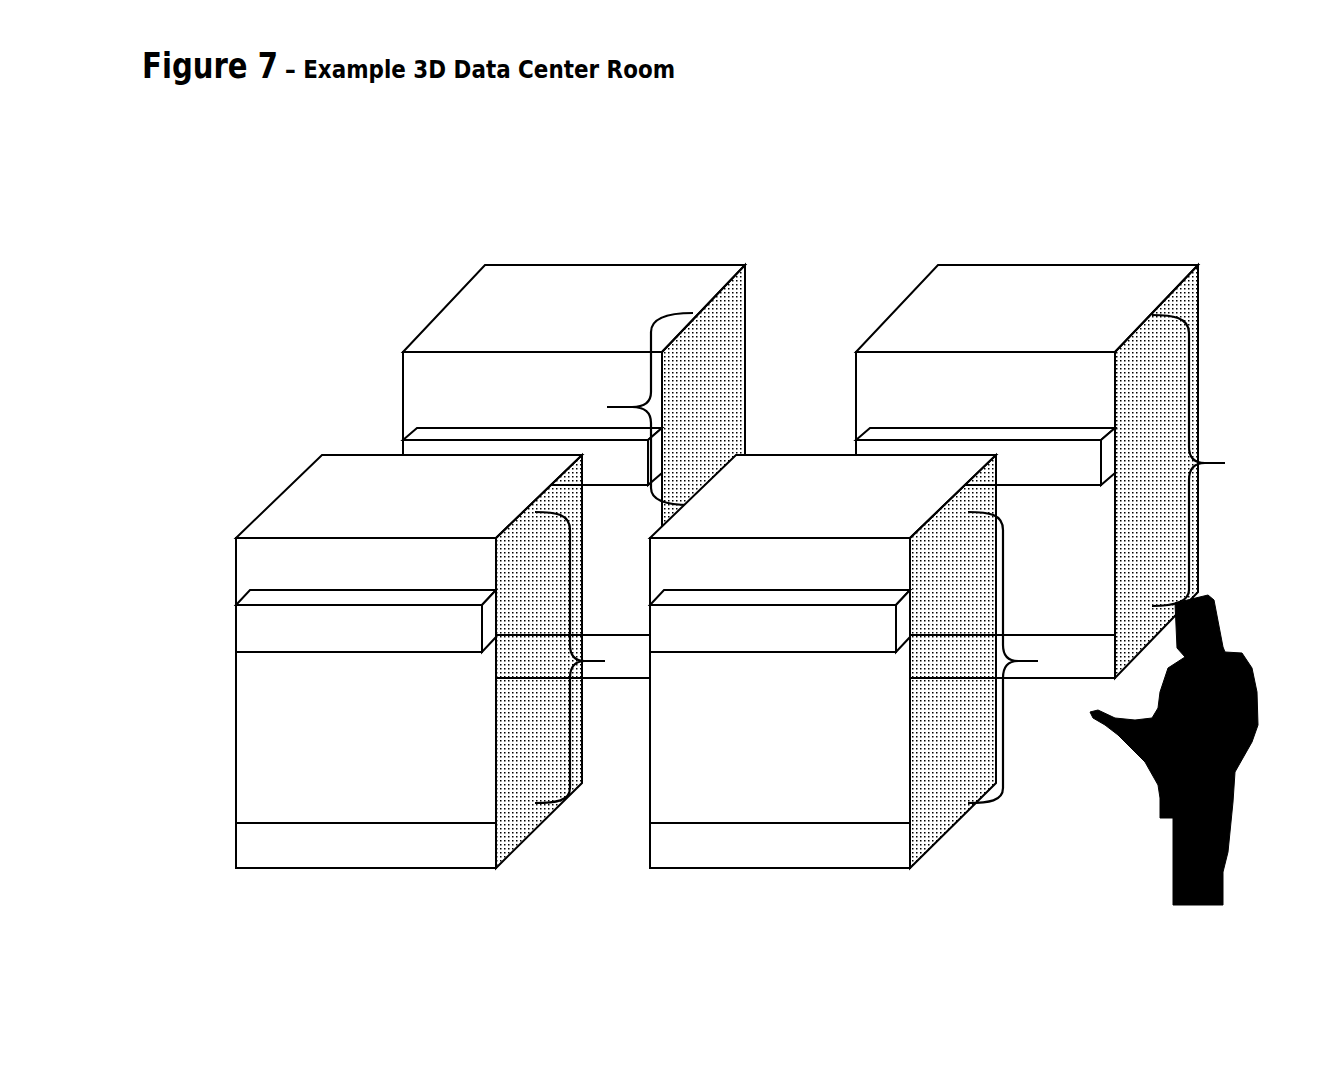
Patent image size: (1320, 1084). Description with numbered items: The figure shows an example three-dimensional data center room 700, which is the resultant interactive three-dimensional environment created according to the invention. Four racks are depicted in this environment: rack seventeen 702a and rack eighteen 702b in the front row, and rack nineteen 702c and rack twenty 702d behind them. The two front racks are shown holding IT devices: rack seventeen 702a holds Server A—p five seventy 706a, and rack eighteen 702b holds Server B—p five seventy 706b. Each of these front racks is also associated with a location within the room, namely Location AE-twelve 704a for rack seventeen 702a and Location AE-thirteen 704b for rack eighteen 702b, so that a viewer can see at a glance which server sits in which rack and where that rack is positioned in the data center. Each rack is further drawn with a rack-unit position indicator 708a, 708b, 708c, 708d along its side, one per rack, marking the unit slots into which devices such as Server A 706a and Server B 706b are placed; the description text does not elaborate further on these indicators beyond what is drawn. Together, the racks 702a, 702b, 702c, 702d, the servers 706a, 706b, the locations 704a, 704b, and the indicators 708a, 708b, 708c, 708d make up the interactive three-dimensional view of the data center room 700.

The example 3D data center room 700 is at (863, 135).
The rack 17 702a is at (409, 661).
The rack 18 702b is at (823, 661).
The rack 19 702c is at (574, 471).
The rack 20 702d is at (1027, 471).
The Location AE-12 704a is at (325, 818).
The Location AE-13 704b is at (741, 818).
The Server A—p570 706a is at (327, 655).
The Server B—p570 706b is at (741, 655).
The rack unit position indicator of rack 17 708a is at (620, 667).
The rack unit position indicator of rack 18 708b is at (1043, 668).
The rack unit position indicator of rack 19 708c is at (605, 407).
The rack unit position indicator of rack 20 708d is at (1241, 467).